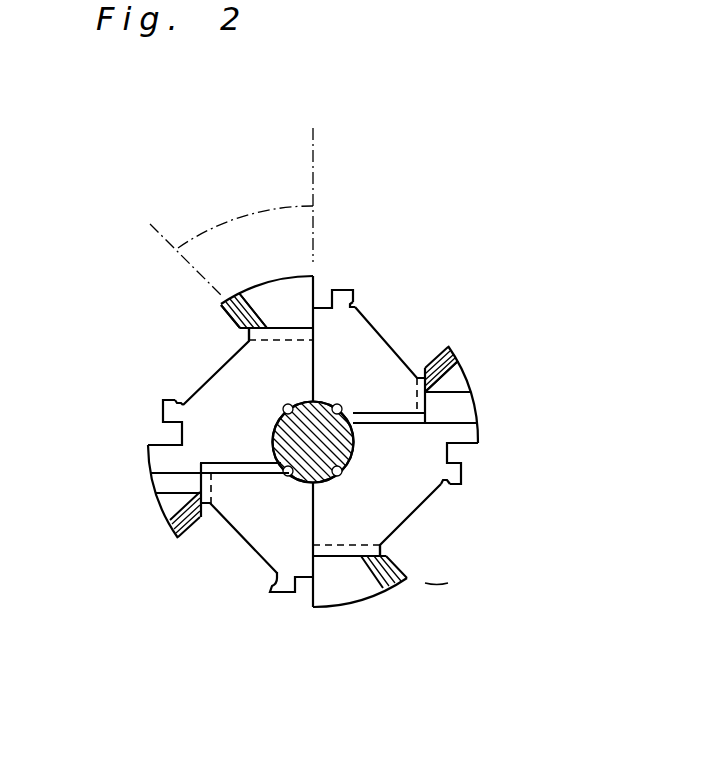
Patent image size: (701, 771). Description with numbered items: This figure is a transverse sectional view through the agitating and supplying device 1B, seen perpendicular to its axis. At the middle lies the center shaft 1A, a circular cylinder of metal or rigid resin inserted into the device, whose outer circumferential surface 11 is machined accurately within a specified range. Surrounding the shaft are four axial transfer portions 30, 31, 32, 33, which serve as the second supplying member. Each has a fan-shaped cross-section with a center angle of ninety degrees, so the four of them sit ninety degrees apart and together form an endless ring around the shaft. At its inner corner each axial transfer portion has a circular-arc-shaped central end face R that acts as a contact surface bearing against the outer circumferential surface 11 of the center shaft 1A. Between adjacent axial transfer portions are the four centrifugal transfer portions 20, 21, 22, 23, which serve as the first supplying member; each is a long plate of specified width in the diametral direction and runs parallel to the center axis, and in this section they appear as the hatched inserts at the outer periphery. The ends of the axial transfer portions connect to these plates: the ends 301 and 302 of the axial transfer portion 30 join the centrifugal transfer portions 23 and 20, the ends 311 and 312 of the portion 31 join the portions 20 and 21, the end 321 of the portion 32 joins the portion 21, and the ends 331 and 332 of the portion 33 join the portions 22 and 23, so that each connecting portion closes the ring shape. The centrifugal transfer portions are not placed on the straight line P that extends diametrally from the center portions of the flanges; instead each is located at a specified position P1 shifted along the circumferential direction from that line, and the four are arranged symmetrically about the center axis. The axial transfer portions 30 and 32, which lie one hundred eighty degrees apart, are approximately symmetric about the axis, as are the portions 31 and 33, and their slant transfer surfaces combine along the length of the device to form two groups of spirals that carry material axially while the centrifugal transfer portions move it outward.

The center shaft 1A is at (314, 422).
The agitating and supplying device 1B is at (486, 443).
The outer circumferential surface 11 is at (354, 442).
The centrifugal transfer portion 20 is at (178, 537).
The centrifugal transfer portion 21 is at (224, 312).
The centrifugal transfer portion 22 is at (450, 351).
The centrifugal transfer portion 23 is at (407, 580).
The axial transfer portion 30 is at (288, 546).
The axial transfer portion 31 is at (236, 388).
The axial transfer portion 32 is at (355, 345).
The axial transfer portion 33 is at (405, 484).
The end of axial transfer portion 301 is at (378, 562).
The end of axial transfer portion 302 is at (207, 505).
The end of axial transfer portion 311 is at (198, 494).
The end of axial transfer portion 312 is at (243, 330).
The end of axial transfer portion 321 is at (257, 315).
The end of axial transfer portion 331 is at (426, 392).
The end of axial transfer portion 332 is at (418, 378).
The straight line P is at (318, 168).
The specified position P1 is at (152, 226).
The circular-arc-shaped central end face R is at (290, 408).